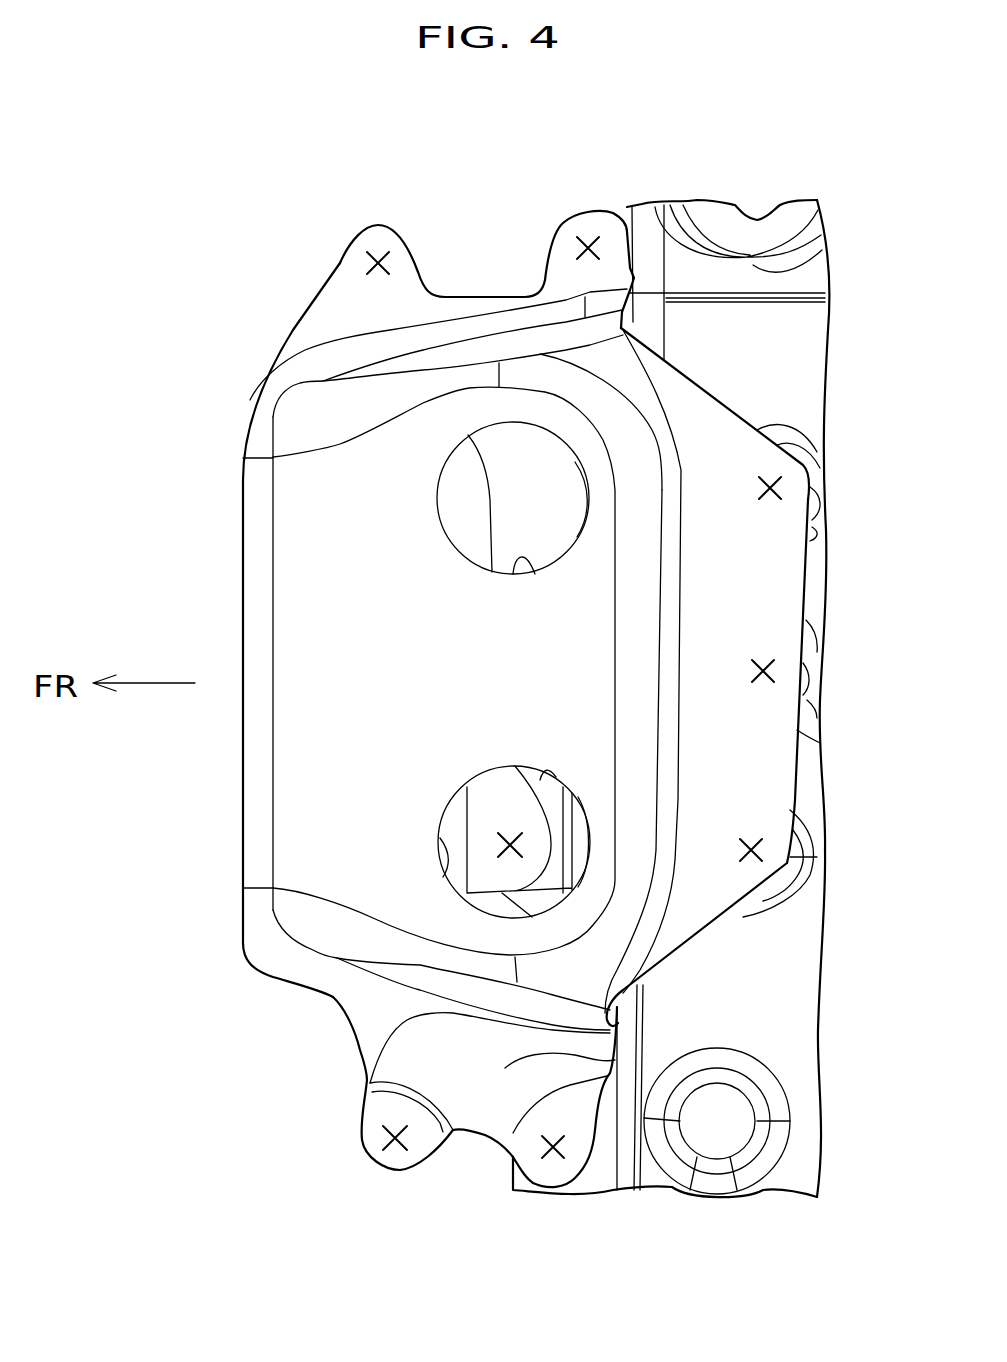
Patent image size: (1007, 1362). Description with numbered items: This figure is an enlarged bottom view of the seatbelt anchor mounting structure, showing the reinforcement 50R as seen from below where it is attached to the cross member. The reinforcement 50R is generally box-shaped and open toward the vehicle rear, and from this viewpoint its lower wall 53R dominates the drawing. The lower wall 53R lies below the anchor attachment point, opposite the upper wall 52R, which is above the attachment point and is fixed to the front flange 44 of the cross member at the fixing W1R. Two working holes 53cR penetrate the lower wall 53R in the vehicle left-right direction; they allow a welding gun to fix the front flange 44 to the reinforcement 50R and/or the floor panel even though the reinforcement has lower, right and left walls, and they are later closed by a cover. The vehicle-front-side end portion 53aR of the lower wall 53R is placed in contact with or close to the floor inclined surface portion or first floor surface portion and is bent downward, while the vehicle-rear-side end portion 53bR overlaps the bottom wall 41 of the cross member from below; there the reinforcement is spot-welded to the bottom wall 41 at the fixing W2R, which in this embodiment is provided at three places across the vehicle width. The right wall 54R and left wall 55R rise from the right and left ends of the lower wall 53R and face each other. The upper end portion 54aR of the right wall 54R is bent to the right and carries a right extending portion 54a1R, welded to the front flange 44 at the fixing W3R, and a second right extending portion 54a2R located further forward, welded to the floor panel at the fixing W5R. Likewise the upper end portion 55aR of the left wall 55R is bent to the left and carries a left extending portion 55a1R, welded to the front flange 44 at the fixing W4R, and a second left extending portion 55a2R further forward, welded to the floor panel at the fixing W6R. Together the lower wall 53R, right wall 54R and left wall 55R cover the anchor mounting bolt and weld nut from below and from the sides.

The bottom wall 41 is at (740, 1023).
The front flange 44 is at (583, 1190).
The reinforcement 50R is at (255, 970).
The upper wall 52R is at (475, 485).
The lower wall 53R is at (347, 707).
The vehicle-front-side end portion of the lower wall 53aR is at (240, 730).
The vehicle-rear-side end portion of the lower wall 53bR is at (803, 730).
The working hole 53cR is at (545, 592).
The right wall 54R is at (492, 350).
The upper end portion of the right wall 54aR is at (428, 300).
The right extending portion 54a1R is at (570, 227).
The second right extending portion 54a2R is at (387, 237).
The left wall 55R is at (487, 997).
The upper end portion of the left wall 55aR is at (478, 1113).
The left extending portion 55a1R is at (533, 1172).
The second left extending portion 55a2R is at (387, 1160).
The fixing W1R is at (500, 845).
The fixing W2R is at (767, 500).
The fixing W3R is at (593, 240).
The fixing W4R is at (545, 1160).
The fixing W5R is at (373, 257).
The fixing W6R is at (363, 1143).